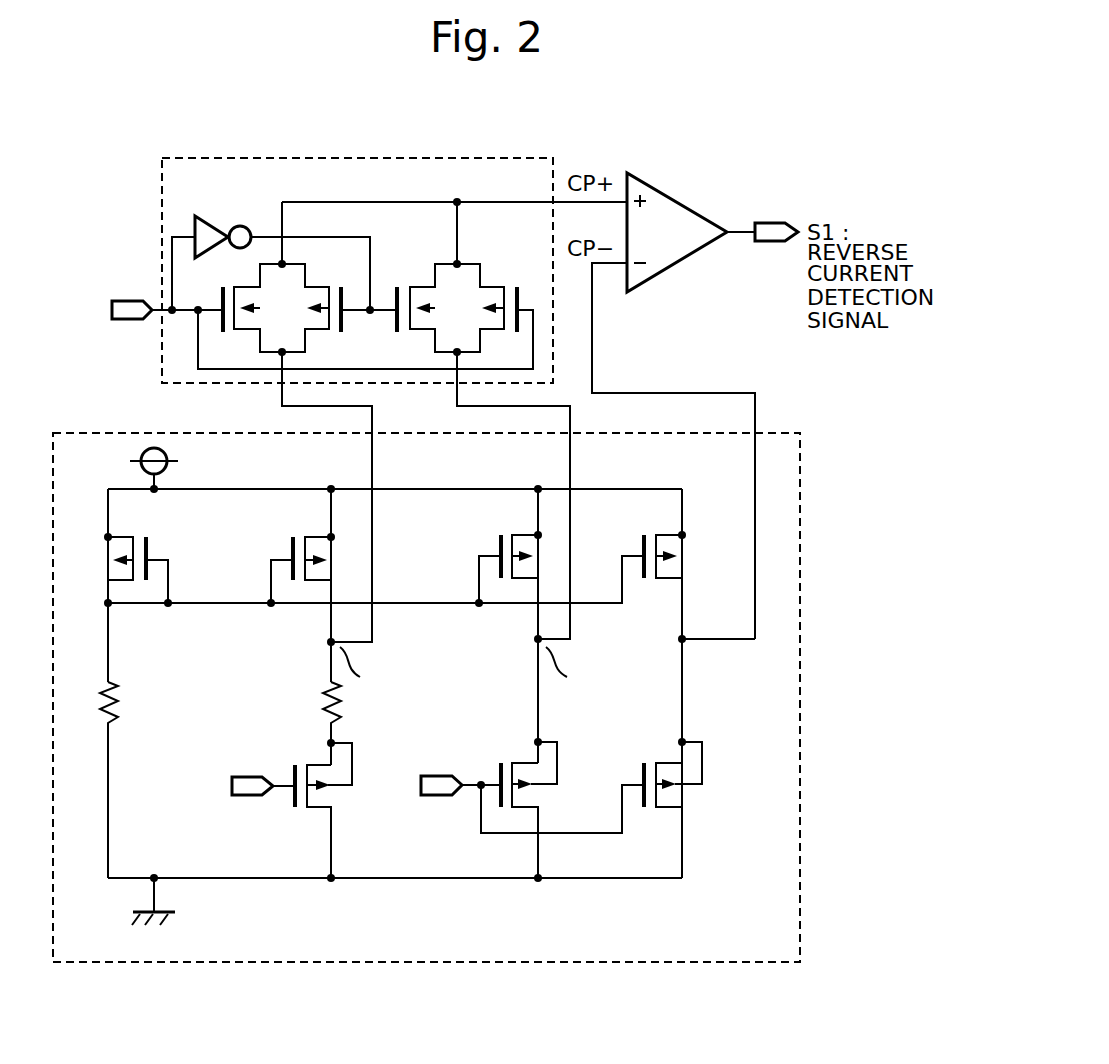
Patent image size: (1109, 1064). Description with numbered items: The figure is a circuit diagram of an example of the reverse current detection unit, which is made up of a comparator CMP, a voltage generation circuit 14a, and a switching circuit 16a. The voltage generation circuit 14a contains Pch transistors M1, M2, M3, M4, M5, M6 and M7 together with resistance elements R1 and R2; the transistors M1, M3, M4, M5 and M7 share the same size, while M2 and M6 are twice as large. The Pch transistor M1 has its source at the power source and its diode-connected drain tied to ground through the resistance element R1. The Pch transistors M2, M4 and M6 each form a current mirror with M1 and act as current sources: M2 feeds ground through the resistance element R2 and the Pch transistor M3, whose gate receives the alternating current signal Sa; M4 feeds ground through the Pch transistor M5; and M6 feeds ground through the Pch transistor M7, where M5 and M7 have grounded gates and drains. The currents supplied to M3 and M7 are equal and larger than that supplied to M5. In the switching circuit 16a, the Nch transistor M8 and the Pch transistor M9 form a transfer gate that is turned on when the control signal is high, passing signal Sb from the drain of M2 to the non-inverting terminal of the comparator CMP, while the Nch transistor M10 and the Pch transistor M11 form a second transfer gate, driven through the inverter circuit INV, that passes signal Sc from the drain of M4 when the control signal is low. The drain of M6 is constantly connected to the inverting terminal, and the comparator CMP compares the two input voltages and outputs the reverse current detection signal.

The switching circuit 16a is at (311, 157).
The voltage generation circuit 14a is at (786, 432).
The inverter circuit INV is at (271, 251).
The comparator CMP is at (712, 231).
The Pch transistor M1 is at (125, 585).
The Pch transistor M2 is at (282, 585).
The Pch transistor M3 is at (324, 805).
The Pch transistor M4 is at (496, 626).
The Pch transistor M5 is at (531, 805).
The Pch transistor M6 is at (686, 683).
The Pch transistor M7 is at (674, 774).
The Nch transistor M8 is at (273, 283).
The Pch transistor M9 is at (363, 326).
The Nch transistor M10 is at (444, 281).
The Pch transistor M11 is at (367, 310).
The resistance element R1 is at (130, 780).
The resistance element R2 is at (309, 723).